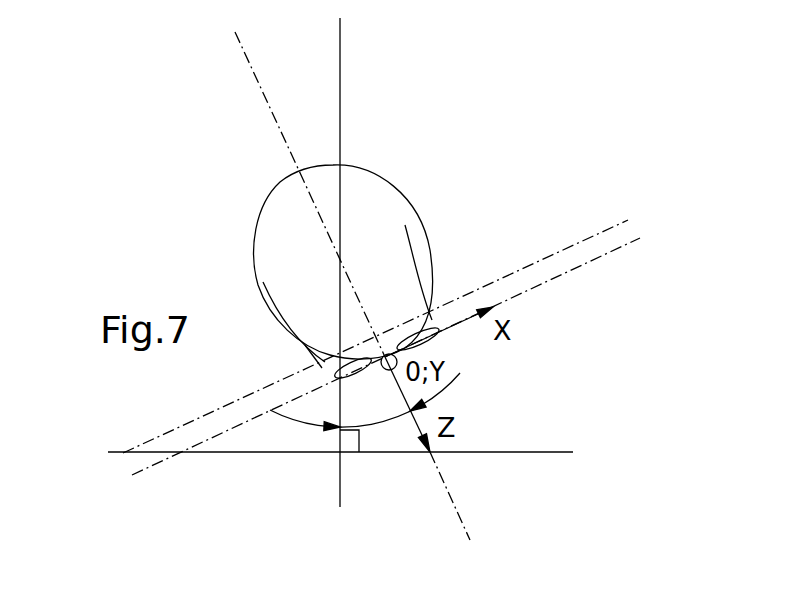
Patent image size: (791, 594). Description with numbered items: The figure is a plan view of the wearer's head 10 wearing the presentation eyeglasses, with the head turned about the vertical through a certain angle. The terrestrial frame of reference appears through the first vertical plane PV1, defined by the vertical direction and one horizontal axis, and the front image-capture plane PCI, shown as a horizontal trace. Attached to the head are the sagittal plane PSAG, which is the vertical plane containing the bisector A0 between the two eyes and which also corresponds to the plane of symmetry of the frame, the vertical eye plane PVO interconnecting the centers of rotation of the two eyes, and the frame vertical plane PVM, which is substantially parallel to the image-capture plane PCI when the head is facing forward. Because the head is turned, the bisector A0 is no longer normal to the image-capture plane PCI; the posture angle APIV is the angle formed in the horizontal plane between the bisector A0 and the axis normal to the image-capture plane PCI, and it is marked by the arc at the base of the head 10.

The head of the pilot / helmet 10 is at (422, 260).
The first vertical plane PV1 is at (342, 47).
The vertical eye plane PVO is at (601, 231).
The frame vertical plane PVM is at (613, 252).
The sagittal plane PSAG is at (242, 47).
The image-capture plane PCI is at (541, 452).
The posture angle APIV is at (389, 421).
The bisector between the two eyes A0 is at (458, 507).